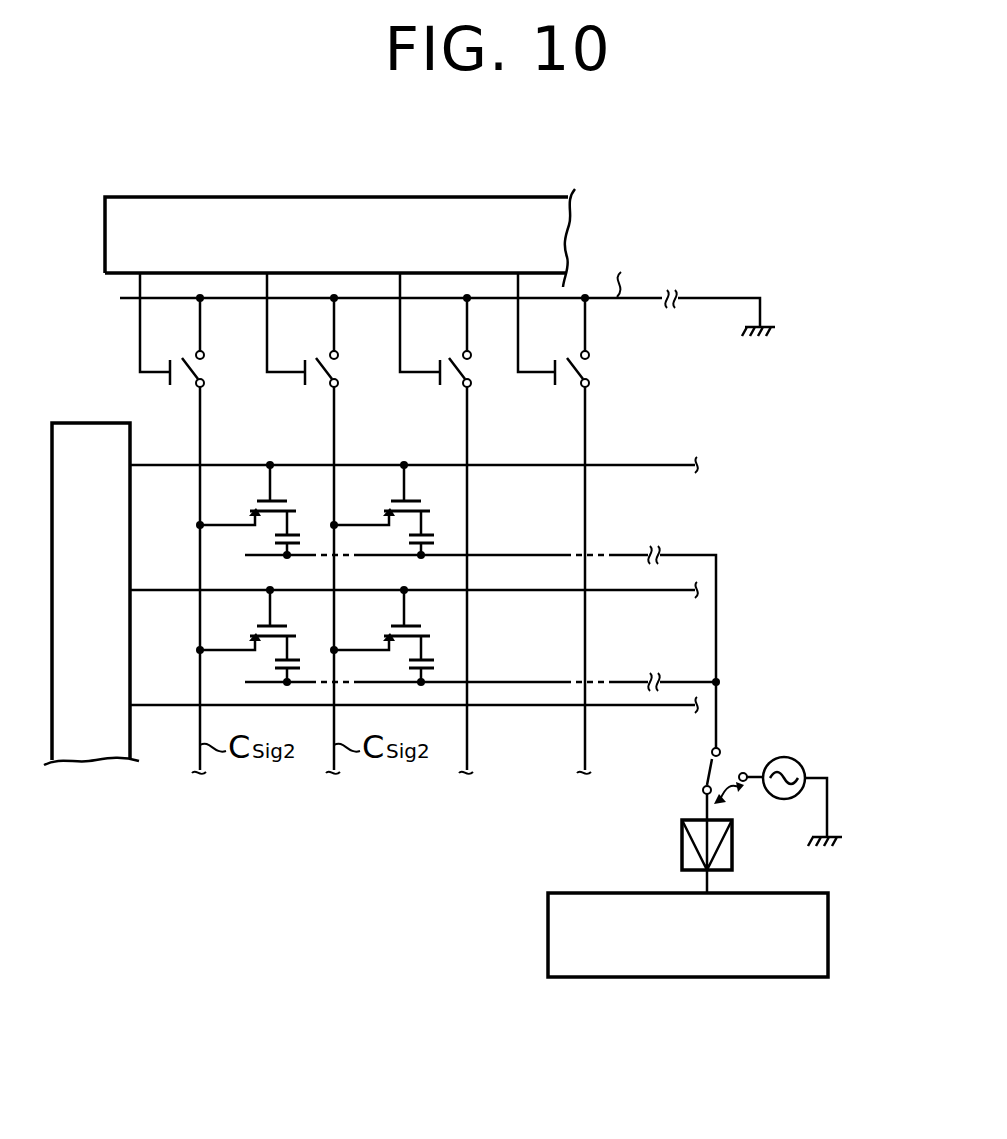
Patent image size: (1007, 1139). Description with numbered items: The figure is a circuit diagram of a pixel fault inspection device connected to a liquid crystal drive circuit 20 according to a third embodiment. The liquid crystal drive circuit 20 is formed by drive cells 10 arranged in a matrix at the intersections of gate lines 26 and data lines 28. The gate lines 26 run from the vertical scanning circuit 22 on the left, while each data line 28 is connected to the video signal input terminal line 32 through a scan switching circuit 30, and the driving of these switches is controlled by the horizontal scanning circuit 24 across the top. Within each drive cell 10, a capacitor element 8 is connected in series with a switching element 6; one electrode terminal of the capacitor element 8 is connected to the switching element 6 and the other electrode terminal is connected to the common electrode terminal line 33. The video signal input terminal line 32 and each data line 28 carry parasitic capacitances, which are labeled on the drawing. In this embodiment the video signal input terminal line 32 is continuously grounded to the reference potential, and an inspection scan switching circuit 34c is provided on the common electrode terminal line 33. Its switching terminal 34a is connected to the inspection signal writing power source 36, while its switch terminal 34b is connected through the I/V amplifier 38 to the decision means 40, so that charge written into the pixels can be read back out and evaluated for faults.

The switching element 6 is at (423, 626).
The capacitor element 8 is at (408, 668).
The drive cell 10 is at (386, 633).
The liquid crystal drive circuit 20 is at (70, 344).
The vertical scanning circuit 22 is at (78, 423).
The horizontal scanning circuit 24 is at (533, 201).
The gate line 26 is at (164, 735).
The data line 28 is at (618, 408).
The scan switching circuit 30 is at (579, 352).
The video signal input terminal line 32 is at (717, 297).
The common electrode terminal line 33 is at (613, 678).
The switching terminal 34a is at (745, 782).
The switch terminal 34b is at (703, 789).
The inspection scan switching circuit 34c is at (727, 773).
The inspection signal writing power source 36 is at (800, 762).
The I/V amplifier 38 is at (682, 845).
The decision means 40 is at (548, 937).